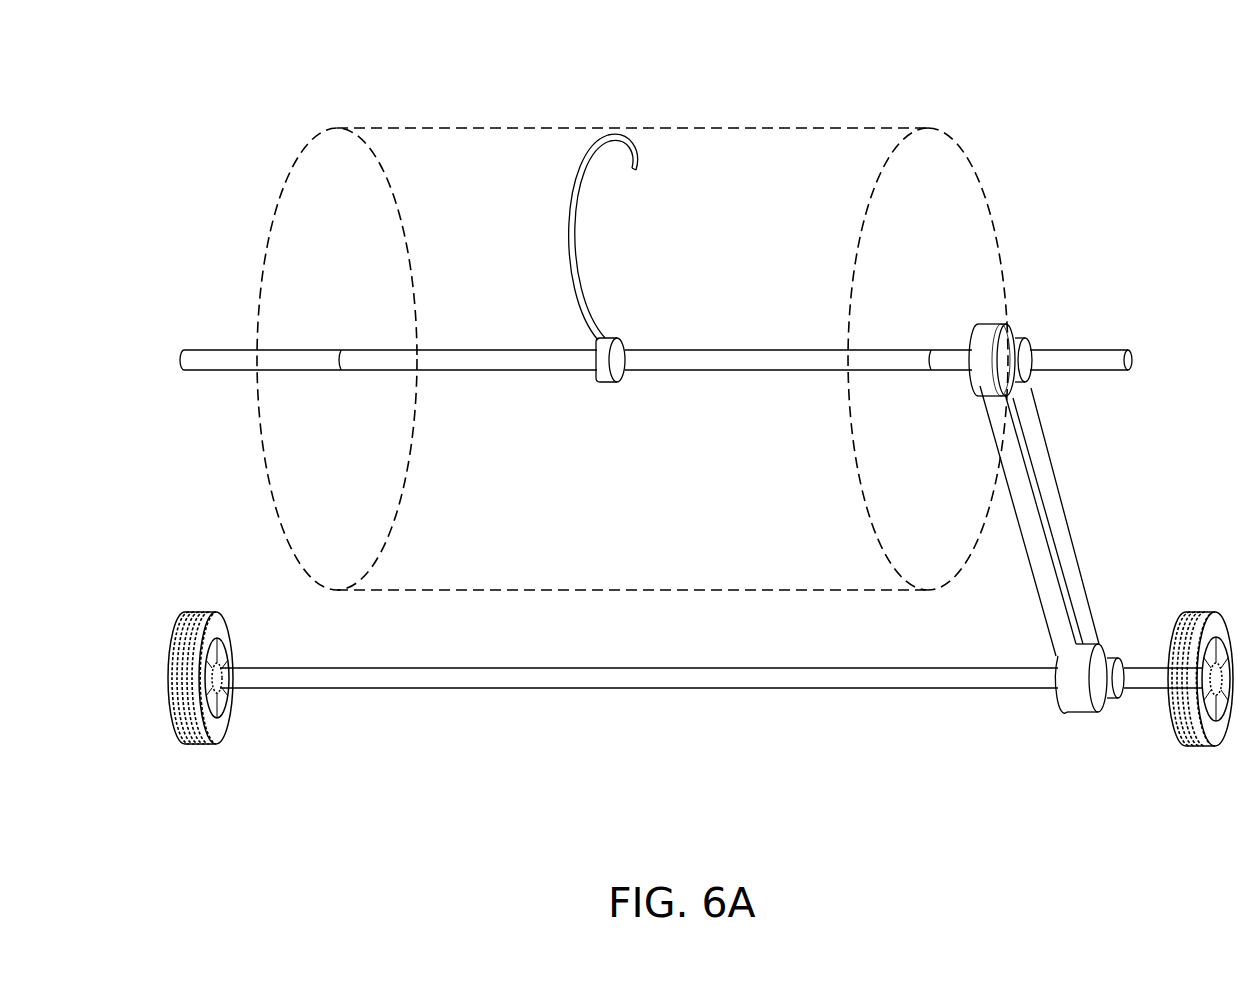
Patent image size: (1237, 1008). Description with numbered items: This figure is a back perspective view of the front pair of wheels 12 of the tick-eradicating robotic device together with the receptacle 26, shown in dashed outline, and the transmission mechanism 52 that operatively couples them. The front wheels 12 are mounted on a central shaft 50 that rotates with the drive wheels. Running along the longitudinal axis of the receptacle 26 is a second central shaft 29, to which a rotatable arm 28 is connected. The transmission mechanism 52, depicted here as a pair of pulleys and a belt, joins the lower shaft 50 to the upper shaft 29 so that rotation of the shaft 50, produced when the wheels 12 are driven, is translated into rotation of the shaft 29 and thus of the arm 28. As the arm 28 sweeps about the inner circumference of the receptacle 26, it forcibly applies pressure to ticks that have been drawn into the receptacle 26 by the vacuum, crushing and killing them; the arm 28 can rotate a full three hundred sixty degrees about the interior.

The wheels 12 is at (187, 747).
The receptacle 26 is at (825, 127).
The rotatable arm 28 is at (593, 147).
The central shaft 29 is at (947, 350).
The shaft 50 is at (677, 688).
The transmission mechanism 52 is at (1067, 500).